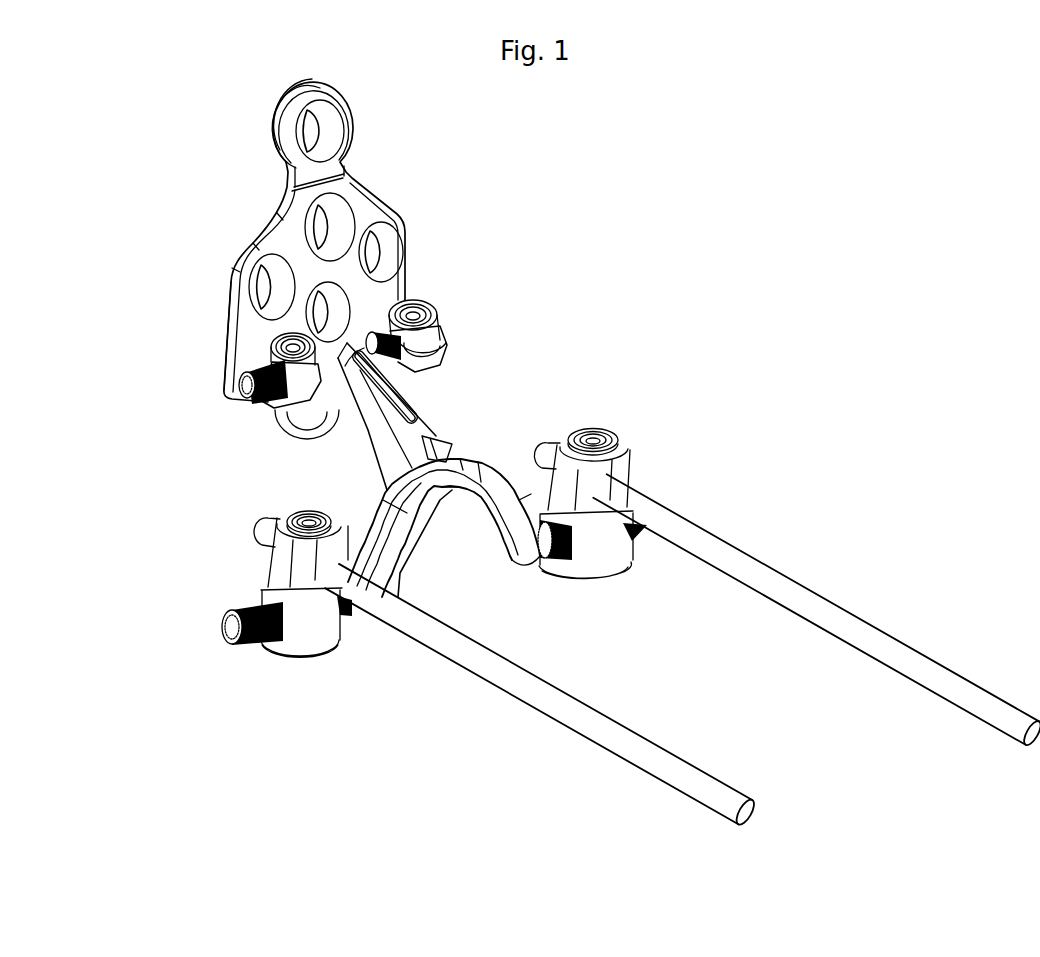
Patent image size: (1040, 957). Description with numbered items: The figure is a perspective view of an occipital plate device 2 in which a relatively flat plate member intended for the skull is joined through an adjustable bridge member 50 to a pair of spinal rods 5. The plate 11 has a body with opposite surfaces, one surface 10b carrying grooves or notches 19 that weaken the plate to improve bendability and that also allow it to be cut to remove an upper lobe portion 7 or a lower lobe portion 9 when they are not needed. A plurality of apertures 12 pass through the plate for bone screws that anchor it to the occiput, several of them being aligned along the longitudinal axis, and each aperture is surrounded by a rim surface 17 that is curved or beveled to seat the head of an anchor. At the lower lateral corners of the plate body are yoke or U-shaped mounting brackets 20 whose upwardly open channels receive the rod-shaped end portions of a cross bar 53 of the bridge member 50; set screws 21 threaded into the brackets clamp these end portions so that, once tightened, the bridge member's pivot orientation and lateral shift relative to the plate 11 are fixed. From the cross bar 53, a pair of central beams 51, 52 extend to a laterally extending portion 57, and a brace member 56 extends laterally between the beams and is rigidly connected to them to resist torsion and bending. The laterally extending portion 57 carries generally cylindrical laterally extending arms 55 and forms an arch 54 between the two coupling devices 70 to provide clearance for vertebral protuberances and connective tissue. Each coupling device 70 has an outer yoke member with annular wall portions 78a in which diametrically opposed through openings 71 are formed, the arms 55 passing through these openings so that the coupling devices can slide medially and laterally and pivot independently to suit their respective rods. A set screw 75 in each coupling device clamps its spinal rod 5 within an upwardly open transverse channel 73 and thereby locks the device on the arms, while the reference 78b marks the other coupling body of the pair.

The device 2 is at (584, 246).
The spinal rods 5 is at (762, 582).
The upper lobe portion 7 is at (290, 92).
The lower lobe portion 9 is at (277, 434).
The surface 10b is at (366, 214).
The plate 11 is at (232, 270).
The apertures 12 is at (312, 130).
The rim surface 17 is at (330, 110).
The grooves or notches 19 is at (290, 186).
The mounting brackets 20 is at (297, 391).
The set screws 21 is at (386, 335).
The bridge member 50 is at (426, 420).
The central beam 51 is at (370, 421).
The central beam 52 is at (419, 412).
The cross bar 53 is at (255, 388).
The arch 54 is at (497, 463).
The laterally extending arms 55 is at (233, 628).
The brace member 56 is at (433, 431).
The laterally extending portion 57 is at (453, 517).
The coupling devices 70 is at (282, 668).
The through openings 71 is at (258, 596).
The transverse channel 73 is at (630, 468).
The set screw 75 is at (273, 526).
The annular wall portions 78a is at (312, 631).
The connector base 78b is at (590, 557).